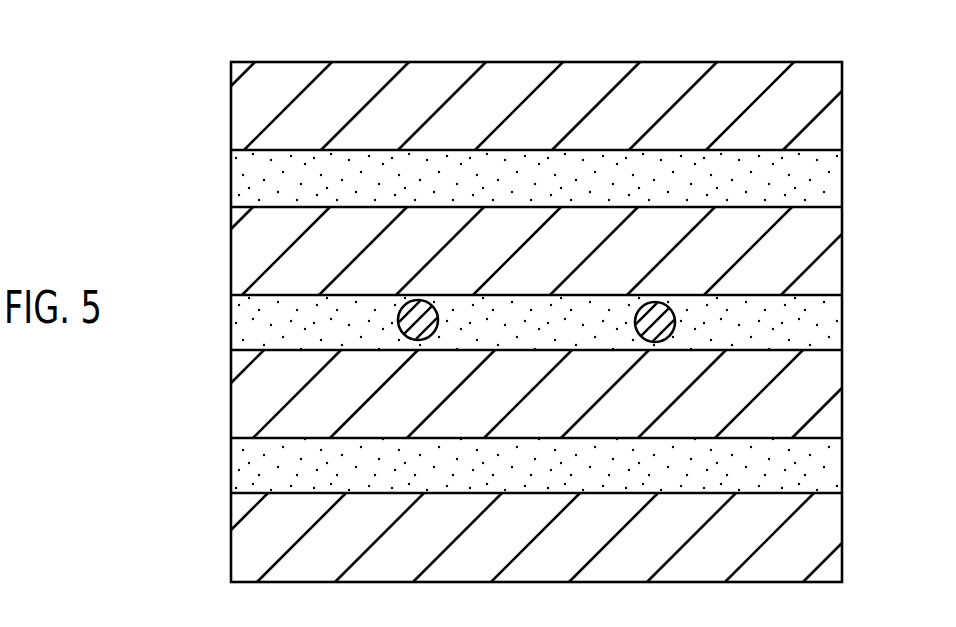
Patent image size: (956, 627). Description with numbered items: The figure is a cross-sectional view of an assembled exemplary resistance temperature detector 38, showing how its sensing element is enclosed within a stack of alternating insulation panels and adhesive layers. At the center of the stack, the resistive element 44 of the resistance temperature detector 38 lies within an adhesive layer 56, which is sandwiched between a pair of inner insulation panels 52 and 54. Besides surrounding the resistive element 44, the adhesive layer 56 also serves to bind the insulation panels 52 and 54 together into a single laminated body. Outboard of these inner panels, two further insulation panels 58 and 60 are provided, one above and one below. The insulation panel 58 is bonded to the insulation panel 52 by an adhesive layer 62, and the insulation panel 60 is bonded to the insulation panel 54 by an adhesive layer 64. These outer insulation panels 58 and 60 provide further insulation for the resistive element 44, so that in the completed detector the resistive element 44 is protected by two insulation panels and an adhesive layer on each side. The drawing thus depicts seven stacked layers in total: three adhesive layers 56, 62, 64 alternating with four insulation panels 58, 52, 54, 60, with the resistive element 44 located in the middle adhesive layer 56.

The resistance temperature detector 38 is at (279, 36).
The resistive element 44 is at (645, 348).
The insulation panel 52 is at (826, 278).
The insulation panel 54 is at (826, 425).
The adhesive layer 56 is at (826, 333).
The insulation panel 58 is at (827, 85).
The insulation panel 60 is at (826, 535).
The adhesive layer 62 is at (826, 188).
The adhesive layer 64 is at (826, 480).